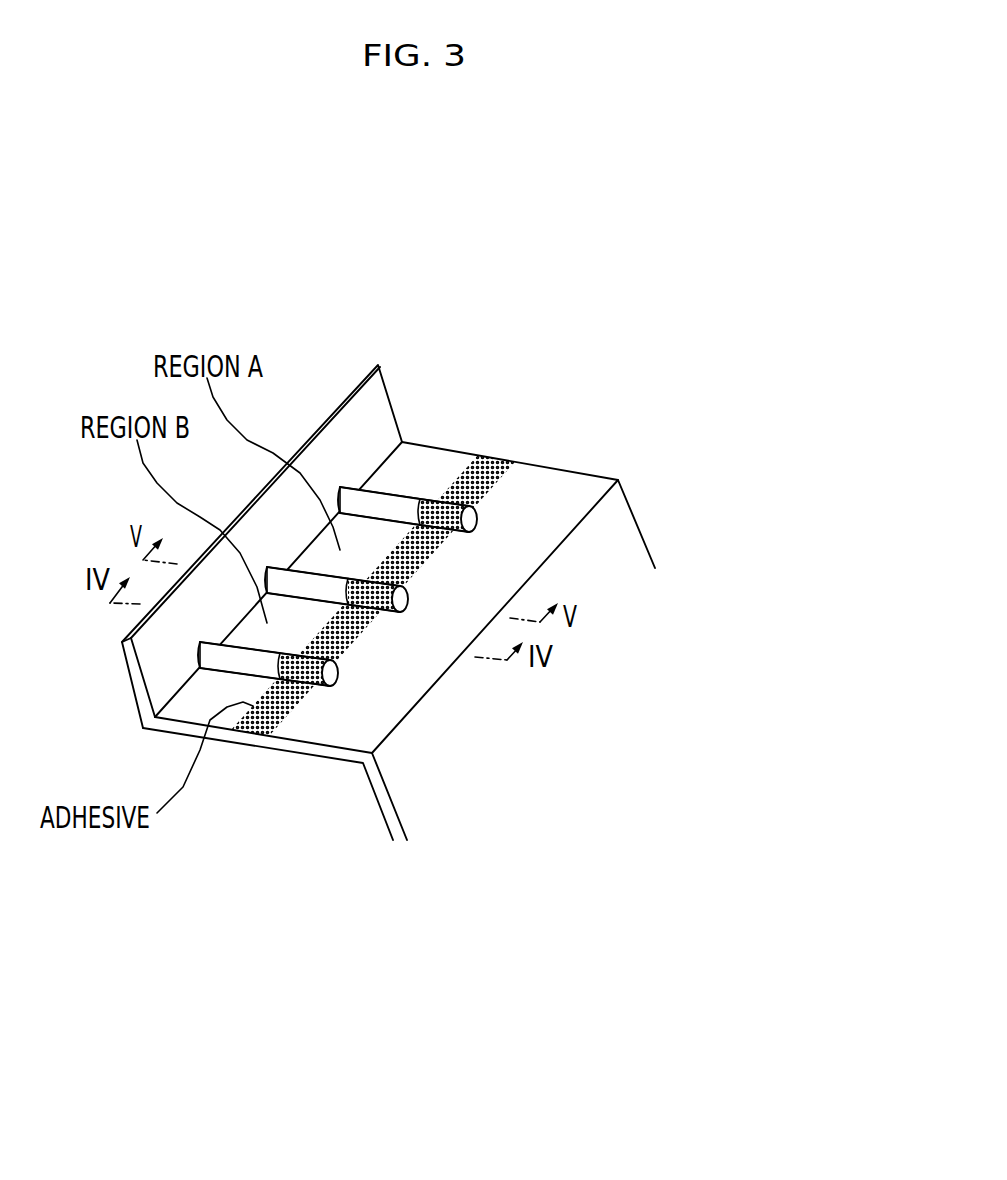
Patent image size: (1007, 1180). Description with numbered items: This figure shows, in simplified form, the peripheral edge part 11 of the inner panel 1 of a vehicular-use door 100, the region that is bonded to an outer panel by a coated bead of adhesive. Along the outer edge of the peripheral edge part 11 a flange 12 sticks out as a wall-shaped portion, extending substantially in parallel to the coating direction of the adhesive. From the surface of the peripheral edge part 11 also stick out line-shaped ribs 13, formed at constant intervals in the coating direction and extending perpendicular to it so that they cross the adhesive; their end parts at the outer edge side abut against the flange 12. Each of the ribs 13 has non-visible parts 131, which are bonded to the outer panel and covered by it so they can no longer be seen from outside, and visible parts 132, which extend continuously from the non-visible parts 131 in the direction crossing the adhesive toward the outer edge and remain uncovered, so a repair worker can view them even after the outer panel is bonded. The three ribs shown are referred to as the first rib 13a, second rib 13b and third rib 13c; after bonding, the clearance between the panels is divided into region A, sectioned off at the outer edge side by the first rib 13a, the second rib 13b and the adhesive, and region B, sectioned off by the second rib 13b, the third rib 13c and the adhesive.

The vehicular-use door 100 is at (328, 217).
The inner panel 1 is at (388, 589).
The peripheral edge part 11 is at (399, 601).
The flange 12 is at (262, 517).
The ribs 13 is at (529, 625).
The first rib 13a is at (599, 412).
The second rib 13b is at (457, 717).
The third rib 13c is at (277, 803).
The non-visible parts 131 is at (488, 430).
The visible parts 132 is at (418, 405).